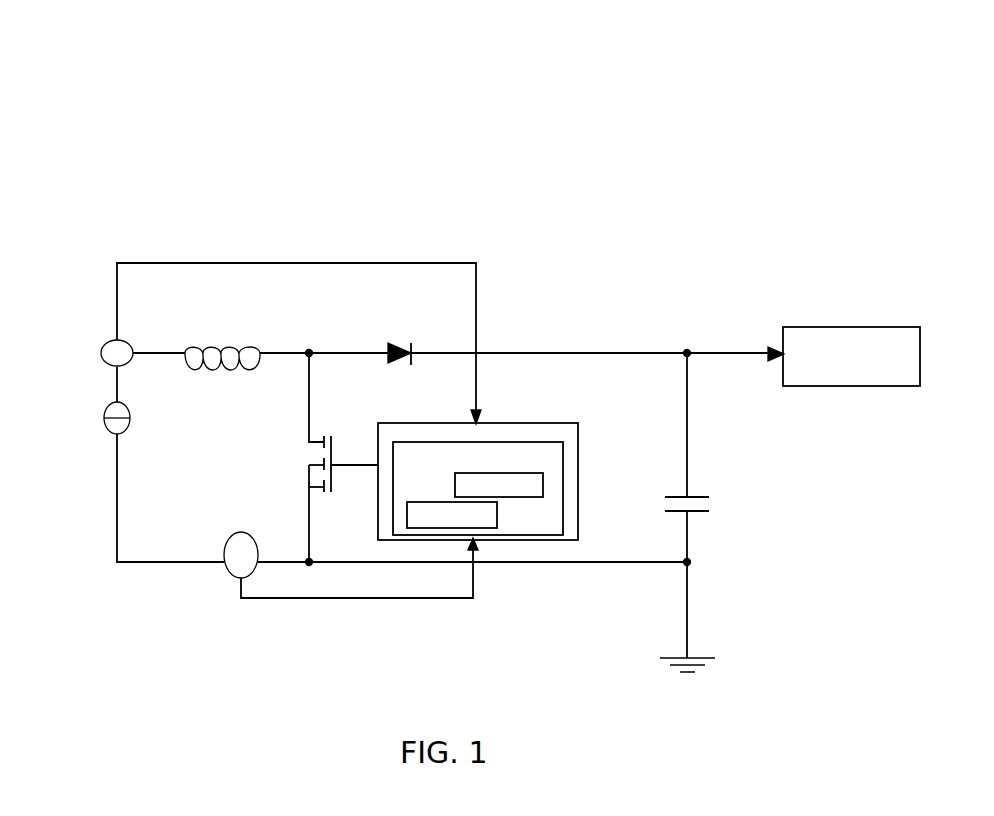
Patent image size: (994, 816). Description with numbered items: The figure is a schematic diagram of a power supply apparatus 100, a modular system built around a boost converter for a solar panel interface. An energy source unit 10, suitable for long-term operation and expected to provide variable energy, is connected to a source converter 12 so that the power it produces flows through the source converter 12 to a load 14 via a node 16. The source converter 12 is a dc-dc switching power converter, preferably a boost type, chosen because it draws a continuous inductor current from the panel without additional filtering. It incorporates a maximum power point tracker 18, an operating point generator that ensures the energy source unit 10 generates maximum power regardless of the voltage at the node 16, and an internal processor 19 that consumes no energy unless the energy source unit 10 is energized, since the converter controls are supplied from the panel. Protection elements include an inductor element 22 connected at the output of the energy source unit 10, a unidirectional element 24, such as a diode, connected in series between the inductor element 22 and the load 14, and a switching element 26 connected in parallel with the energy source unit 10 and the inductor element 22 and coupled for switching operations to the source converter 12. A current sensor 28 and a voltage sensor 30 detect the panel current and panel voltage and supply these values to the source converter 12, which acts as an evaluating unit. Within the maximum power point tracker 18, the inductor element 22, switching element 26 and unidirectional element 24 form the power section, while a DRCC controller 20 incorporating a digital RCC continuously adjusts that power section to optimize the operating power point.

The power supply apparatus 100 is at (275, 150).
The energy source unit 10 is at (109, 432).
The source converter 12 is at (528, 423).
The load 14 is at (878, 387).
The node 16 is at (687, 350).
The maximum power point tracker 18 is at (564, 444).
The internal processor 19 is at (499, 517).
The DRCC controller 20 is at (545, 491).
The inductor element 22 is at (215, 365).
The unidirectional element 24 is at (400, 343).
The switching element 26 is at (335, 447).
The current sensor 28 is at (227, 566).
The voltage sensor 30 is at (104, 348).